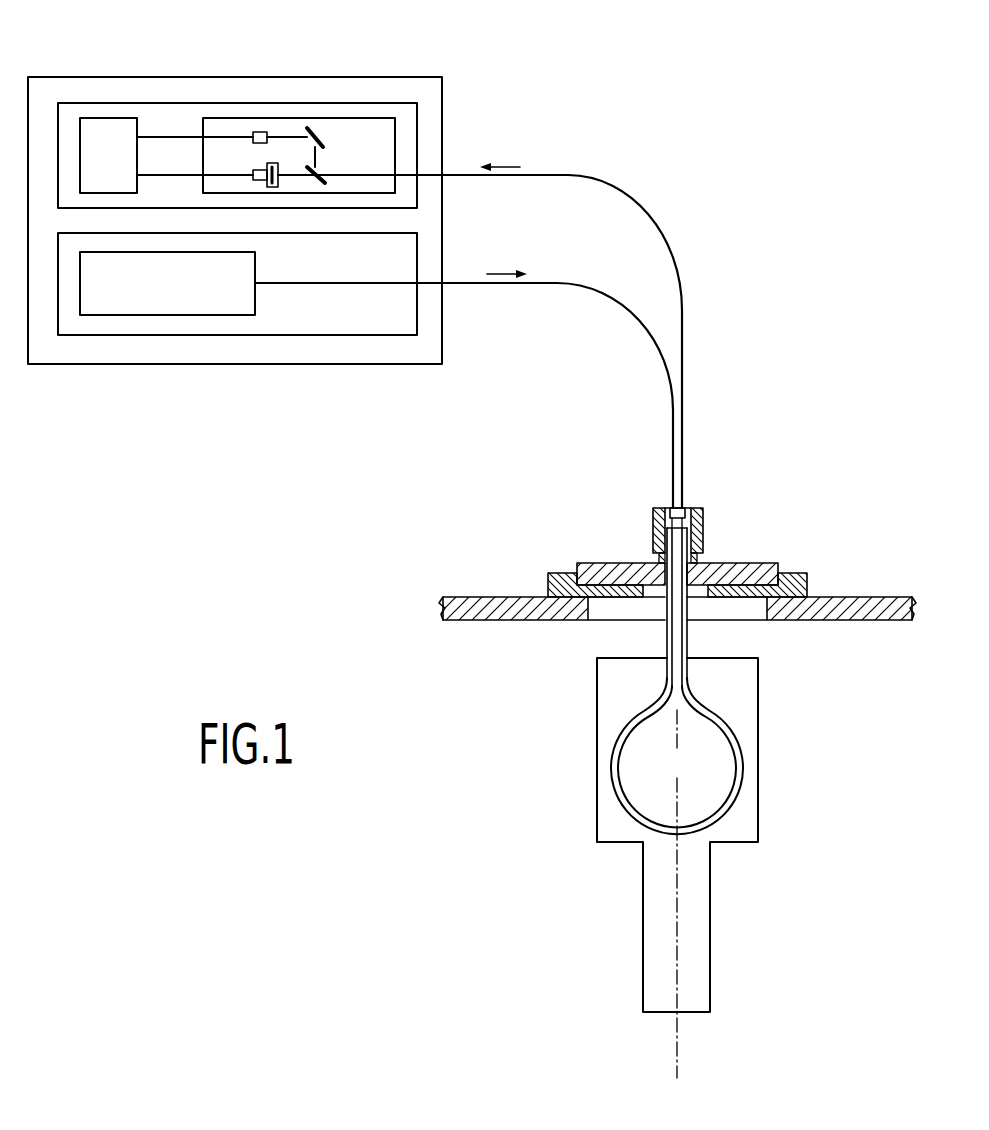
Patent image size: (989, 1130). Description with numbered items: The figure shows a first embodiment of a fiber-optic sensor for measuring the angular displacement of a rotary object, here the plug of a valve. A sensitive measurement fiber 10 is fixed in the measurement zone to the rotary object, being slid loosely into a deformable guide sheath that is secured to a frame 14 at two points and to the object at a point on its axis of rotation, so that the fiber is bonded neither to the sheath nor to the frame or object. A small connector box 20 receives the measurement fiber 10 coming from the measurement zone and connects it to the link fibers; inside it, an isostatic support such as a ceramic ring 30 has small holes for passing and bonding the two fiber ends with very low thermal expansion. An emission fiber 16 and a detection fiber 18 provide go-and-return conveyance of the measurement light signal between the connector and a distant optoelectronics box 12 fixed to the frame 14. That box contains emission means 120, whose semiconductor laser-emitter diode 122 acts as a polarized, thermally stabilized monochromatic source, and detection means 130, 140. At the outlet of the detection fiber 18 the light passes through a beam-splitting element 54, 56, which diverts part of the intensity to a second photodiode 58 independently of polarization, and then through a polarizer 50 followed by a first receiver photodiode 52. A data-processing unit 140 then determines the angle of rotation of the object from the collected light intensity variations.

The sensitive measurement fiber 10 is at (612, 755).
The optoelectronics box 12 is at (350, 365).
The frame 14 is at (483, 607).
The emission fiber 16 is at (517, 285).
The detection fiber 18 is at (617, 192).
The box 20 is at (703, 528).
The ceramic ring 30 is at (663, 517).
The polarizer 50 is at (287, 178).
The first receiver photodiode 52 is at (260, 168).
The beam-splitting element 54 is at (328, 182).
The beam-splitting element 56 is at (320, 128).
The second photodiode 58 is at (260, 132).
The emission means 120 is at (87, 330).
The semiconductor laser-emitter diode 122 is at (183, 307).
The detection means 130 is at (385, 127).
The data-processing unit 140 is at (112, 138).